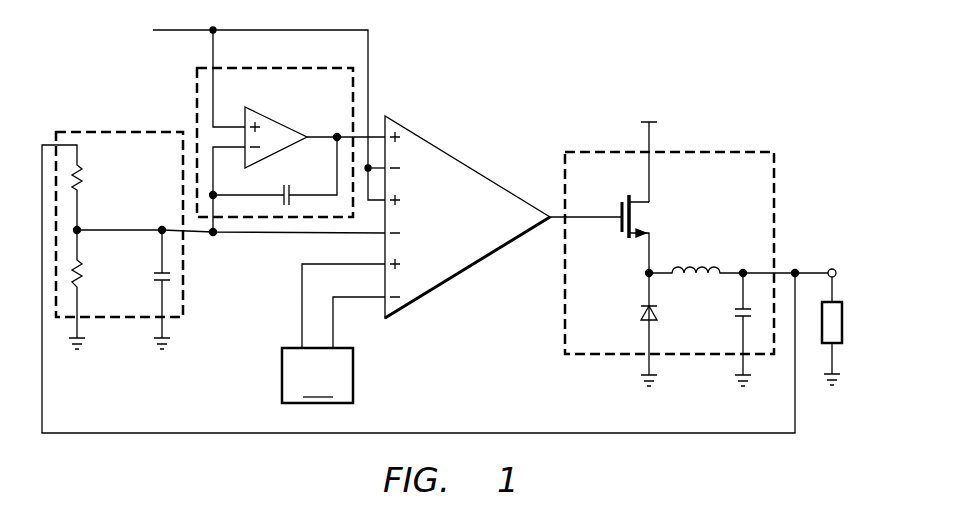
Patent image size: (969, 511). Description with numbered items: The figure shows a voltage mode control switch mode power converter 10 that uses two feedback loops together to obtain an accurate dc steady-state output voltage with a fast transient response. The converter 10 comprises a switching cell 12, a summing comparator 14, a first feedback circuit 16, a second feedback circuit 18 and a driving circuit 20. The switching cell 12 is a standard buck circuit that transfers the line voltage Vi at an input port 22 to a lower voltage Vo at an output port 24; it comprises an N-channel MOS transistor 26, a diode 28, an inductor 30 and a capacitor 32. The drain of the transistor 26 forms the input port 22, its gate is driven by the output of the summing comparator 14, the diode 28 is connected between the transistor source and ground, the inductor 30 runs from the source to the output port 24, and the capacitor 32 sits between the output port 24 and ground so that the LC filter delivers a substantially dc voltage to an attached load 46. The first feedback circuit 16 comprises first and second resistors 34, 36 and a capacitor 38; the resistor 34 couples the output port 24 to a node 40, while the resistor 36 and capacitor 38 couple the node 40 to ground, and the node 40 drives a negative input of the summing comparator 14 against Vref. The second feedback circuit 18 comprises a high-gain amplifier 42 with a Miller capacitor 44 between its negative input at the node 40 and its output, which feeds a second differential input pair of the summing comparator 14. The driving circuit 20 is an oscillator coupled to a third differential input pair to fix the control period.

The switch mode power converter 10 is at (590, 58).
The switching cell 12 is at (750, 151).
The summing comparator 14 is at (464, 164).
The first feedback circuit 16 is at (184, 300).
The second feedback circuit 18 is at (196, 96).
The driving circuit 20 is at (333, 333).
The input port 22 is at (651, 137).
The output port 24 is at (808, 272).
The N-channel MOS transistor 26 is at (621, 200).
The diode 28 is at (640, 311).
The inductor 30 is at (697, 264).
The capacitor 32 is at (734, 316).
The first resistor 34 is at (80, 172).
The second resistor 36 is at (82, 282).
The capacitor 38 is at (152, 273).
The node 40 is at (80, 222).
The amplifier 42 is at (276, 118).
The capacitor 44 is at (290, 184).
The load 46 is at (843, 320).